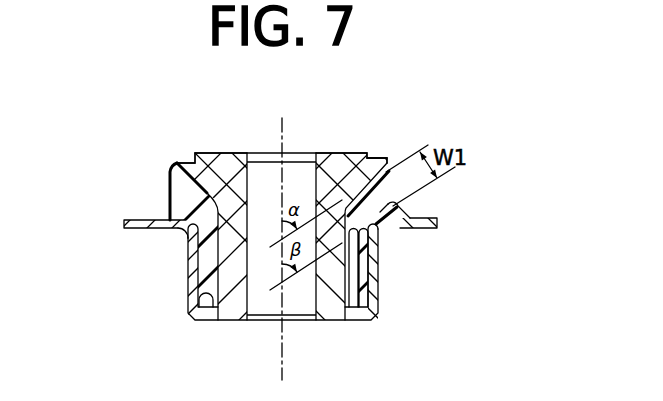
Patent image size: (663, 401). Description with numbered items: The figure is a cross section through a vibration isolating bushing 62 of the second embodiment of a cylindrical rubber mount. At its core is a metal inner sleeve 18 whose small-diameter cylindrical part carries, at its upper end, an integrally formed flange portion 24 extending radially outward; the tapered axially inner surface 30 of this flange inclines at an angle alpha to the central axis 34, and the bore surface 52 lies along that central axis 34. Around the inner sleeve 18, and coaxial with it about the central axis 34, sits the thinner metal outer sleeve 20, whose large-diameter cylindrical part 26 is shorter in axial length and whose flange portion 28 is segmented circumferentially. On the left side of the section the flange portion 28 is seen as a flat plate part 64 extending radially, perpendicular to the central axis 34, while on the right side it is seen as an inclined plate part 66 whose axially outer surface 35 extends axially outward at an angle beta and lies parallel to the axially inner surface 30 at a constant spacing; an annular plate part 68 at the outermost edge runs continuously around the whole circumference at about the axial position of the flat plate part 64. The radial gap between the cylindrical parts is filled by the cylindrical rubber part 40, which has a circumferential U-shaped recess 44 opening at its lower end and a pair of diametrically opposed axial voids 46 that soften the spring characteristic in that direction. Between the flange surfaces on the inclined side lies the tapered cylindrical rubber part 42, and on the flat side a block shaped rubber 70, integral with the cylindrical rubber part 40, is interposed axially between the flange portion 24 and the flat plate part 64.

The inner sleeve 18 is at (243, 150).
The outer sleeve 20 is at (390, 298).
The flange portion 24 is at (216, 162).
The cylindrical part 26 is at (188, 284).
The flange portion 28 is at (147, 209).
The axially inner surface 30 is at (376, 166).
The central axis 34 is at (286, 118).
The axially outer surface 35 is at (398, 203).
The cylindrical rubber part 40 is at (190, 243).
The tapered cylindrical rubber part 42 is at (358, 198).
The recess 44 is at (207, 308).
The voids 46 is at (357, 310).
The bore surface 52 is at (256, 240).
The vibration isolating bushing 62 is at (374, 109).
The flat plate parts 64 is at (136, 218).
The inclined plate parts 66 is at (390, 228).
The annular plate part 68 is at (437, 223).
The block shaped rubber 70 is at (183, 192).